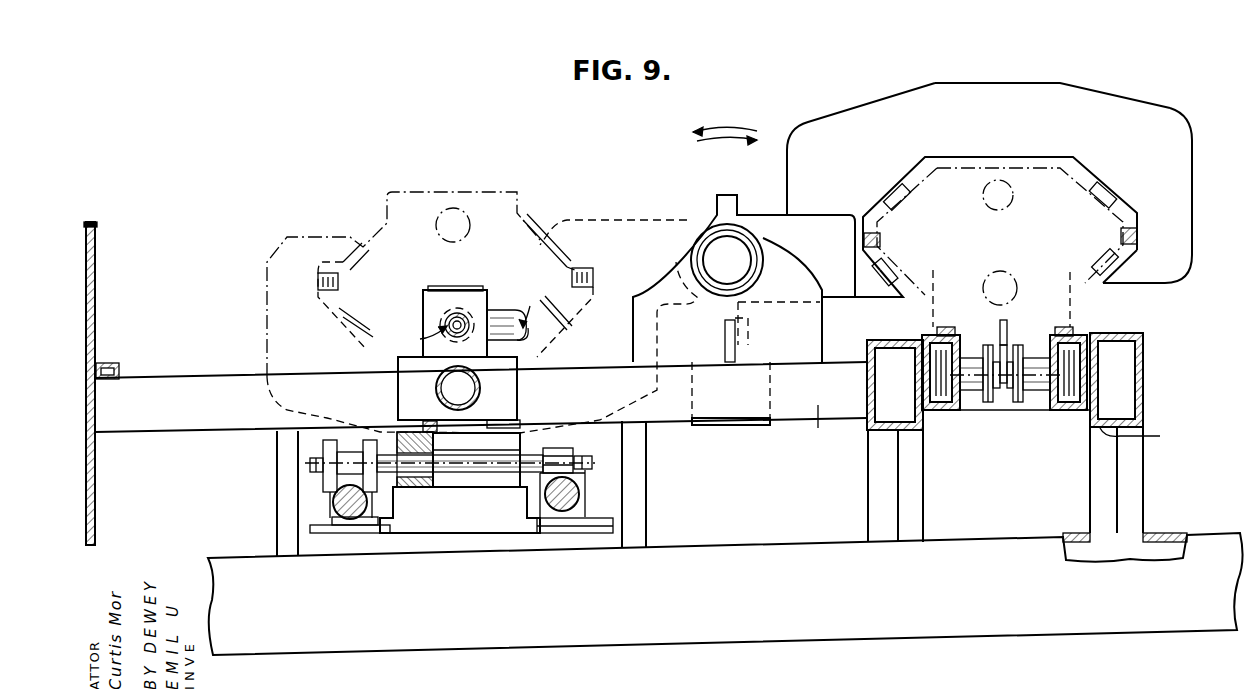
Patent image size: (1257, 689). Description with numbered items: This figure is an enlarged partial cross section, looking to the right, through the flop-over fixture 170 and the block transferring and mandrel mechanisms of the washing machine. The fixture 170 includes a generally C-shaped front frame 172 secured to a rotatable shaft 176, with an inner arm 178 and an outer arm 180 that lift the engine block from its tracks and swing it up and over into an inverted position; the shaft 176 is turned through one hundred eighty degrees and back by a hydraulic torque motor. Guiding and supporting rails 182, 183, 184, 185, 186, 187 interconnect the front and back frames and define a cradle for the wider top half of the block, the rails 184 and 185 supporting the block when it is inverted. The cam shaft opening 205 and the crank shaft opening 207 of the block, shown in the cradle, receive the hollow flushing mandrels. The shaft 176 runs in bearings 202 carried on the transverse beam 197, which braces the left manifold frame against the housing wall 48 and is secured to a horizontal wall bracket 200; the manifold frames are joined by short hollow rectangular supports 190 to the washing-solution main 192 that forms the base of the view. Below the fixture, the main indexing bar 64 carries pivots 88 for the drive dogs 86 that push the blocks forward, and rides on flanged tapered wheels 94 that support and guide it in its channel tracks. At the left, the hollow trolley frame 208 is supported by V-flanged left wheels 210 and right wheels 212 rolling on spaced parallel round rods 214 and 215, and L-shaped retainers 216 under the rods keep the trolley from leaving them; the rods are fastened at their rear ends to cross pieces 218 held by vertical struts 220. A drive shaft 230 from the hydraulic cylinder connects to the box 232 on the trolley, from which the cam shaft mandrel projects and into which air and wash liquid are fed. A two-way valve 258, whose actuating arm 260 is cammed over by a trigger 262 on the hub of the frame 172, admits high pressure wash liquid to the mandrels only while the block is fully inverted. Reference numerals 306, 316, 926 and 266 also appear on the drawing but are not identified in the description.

The housing wall 48 is at (96, 270).
The horizontal wall bracket 200 is at (119, 366).
The main 192 is at (708, 643).
The vertical struts 220 is at (277, 456).
The cross pieces 218 is at (450, 548).
The L-shaped retainers 216 is at (358, 527).
The round rod 214 is at (345, 507).
The round rod 215 is at (580, 490).
The left wheels 210 is at (366, 448).
The hollow trolley frame 208 is at (473, 488).
The right wheels 212 is at (568, 452).
The drive shaft 230 is at (481, 400).
The mandrel box 232 is at (440, 292).
The rotatable shaft 176 is at (733, 252).
The bearings 202 is at (794, 278).
The flop-over fixture 170 is at (989, 177).
The front C-shaped frame 172 is at (1060, 86).
The outer arm 180 is at (1110, 288).
The inner arm 178 is at (900, 297).
The cam shaft opening 205 is at (1014, 200).
The crank shaft opening 207 is at (1007, 280).
The supporting rail 184 is at (906, 202).
The guiding and supporting rail 183 is at (884, 240).
The guiding and supporting rail 182 is at (905, 270).
The supporting rail 185 is at (1107, 190).
The guiding and supporting rail 186 is at (1137, 233).
The guiding and supporting rail 187 is at (1096, 262).
The trigger 262 is at (748, 318).
The valve actuating arm 260 is at (742, 340).
The two-way valve 258 is at (728, 428).
The transverse beam 197 is at (820, 427).
The bearing blocks 306 is at (882, 396).
The hollow rectangular supports 190 is at (868, 494).
The fillet 316 is at (1140, 434).
The bearing cups 926 is at (942, 412).
The retainer blocks 266 is at (946, 326).
The flanged tapered wheels 94 is at (963, 400).
The pivots 88 is at (970, 356).
The drive dogs 86 is at (1008, 322).
The main indexing bar 64 is at (1005, 400).